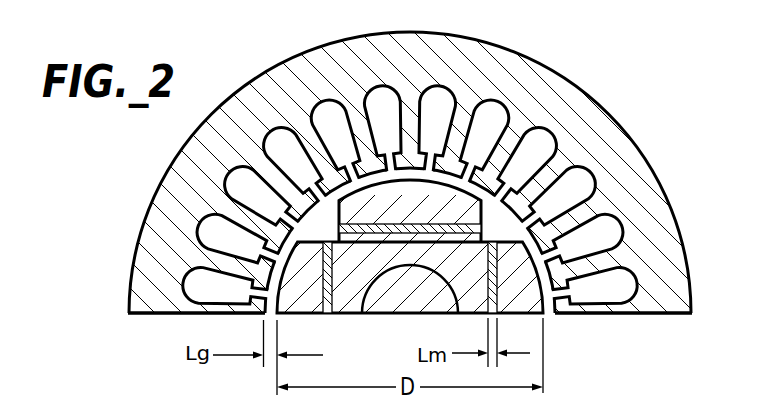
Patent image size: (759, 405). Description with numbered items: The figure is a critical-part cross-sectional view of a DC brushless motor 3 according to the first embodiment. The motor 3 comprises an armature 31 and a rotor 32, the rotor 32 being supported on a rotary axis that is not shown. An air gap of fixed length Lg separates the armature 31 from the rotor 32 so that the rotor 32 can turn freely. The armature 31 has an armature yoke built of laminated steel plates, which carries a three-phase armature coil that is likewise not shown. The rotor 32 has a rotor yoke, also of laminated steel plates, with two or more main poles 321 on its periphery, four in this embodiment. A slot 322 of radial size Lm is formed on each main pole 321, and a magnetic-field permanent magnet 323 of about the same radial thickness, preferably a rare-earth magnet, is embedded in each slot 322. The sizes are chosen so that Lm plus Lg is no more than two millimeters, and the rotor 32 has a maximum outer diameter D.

The DC brushless motor 3 is at (595, 34).
The armature 31 is at (569, 87).
The rotor 32 is at (410, 189).
The main pole 321 is at (360, 202).
The slot 322 is at (422, 225).
The magnetic-field permanent magnet 323 is at (405, 237).